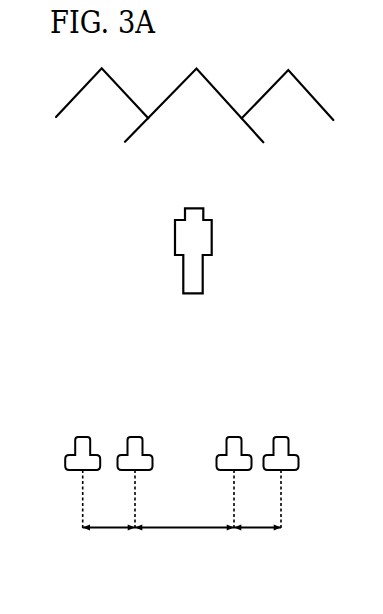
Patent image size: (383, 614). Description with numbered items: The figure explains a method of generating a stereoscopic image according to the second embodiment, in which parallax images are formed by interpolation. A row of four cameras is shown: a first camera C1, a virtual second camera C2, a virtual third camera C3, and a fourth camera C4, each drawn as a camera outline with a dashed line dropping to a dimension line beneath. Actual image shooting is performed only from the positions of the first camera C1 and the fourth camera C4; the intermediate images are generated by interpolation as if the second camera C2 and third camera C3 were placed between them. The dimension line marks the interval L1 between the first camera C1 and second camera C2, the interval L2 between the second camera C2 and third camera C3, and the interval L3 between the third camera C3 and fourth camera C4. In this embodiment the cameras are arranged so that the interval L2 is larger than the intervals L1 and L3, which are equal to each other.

The first camera C1 is at (87, 482).
The second camera C2 is at (140, 482).
The third camera C3 is at (239, 482).
The fourth camera C4 is at (285, 482).
The interval between first camera and second camera L1 is at (109, 538).
The interval between second camera and third camera L2 is at (184, 538).
The interval between third camera and fourth camera L3 is at (257, 538).